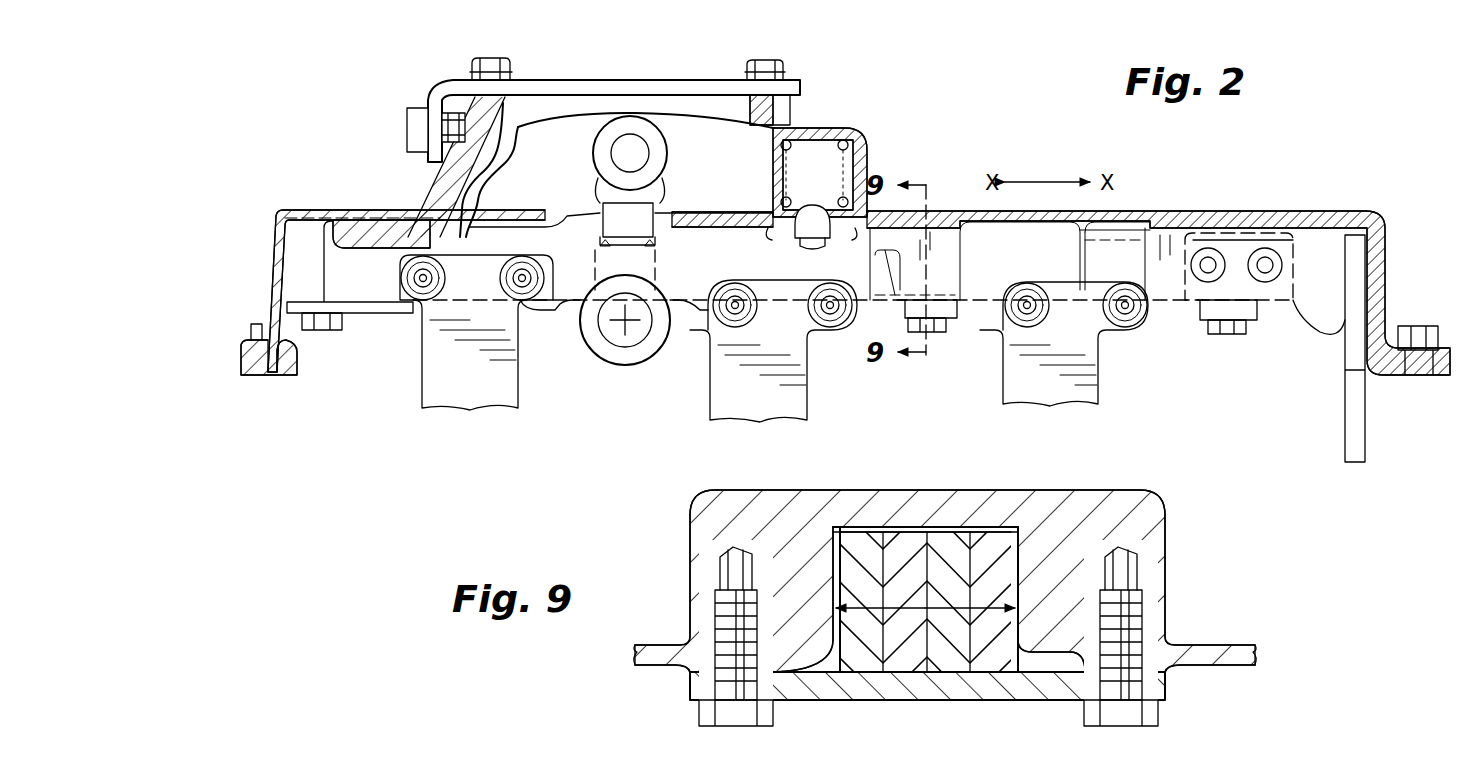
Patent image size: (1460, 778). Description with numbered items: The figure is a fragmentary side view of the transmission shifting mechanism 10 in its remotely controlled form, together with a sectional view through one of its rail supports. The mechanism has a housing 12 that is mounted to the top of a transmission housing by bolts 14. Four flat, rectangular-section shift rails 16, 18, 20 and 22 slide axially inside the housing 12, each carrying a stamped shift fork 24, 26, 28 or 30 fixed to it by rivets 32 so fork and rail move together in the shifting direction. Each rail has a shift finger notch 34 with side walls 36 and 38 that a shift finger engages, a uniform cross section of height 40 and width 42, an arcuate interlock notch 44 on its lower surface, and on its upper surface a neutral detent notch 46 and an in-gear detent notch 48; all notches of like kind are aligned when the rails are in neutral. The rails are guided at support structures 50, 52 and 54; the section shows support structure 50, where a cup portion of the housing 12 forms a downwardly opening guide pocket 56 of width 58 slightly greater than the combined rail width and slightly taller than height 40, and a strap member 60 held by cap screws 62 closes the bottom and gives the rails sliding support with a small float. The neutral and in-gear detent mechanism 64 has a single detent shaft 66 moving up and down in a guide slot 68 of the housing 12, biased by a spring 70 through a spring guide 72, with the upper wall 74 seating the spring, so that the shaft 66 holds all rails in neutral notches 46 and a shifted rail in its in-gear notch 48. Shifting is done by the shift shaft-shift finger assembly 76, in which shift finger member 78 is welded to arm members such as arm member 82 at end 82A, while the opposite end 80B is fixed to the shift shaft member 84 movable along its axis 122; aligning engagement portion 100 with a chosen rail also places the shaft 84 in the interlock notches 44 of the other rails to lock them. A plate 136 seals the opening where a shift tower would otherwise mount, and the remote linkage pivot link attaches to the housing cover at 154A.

In FIG. 2, the transmission shifting mechanism 10 is at (940, 140).
In FIG. 2, the housing 12 is at (273, 252).
In FIG. 9, the housing 12 is at (805, 510).
In FIG. 2, the bolts 14 is at (254, 324).
In FIG. 9, the reverse speed shift rail 16 is at (1013, 660).
In FIG. 9, the first and second speed shift rail 18 is at (948, 660).
In FIG. 9, the third and fourth speed shift rail 20 is at (905, 660).
In FIG. 9, the fifth and sixth speed shift rail 22 is at (838, 660).
In FIG. 2, the shift fork 24 is at (1350, 410).
In FIG. 2, the shift fork 26 is at (1085, 402).
In FIG. 2, the shift fork 28 is at (790, 404).
In FIG. 2, the shift fork 30 is at (505, 376).
In FIG. 2, the rivets 32 is at (420, 282).
In FIG. 2, the shift finger notch 34 is at (648, 250).
In FIG. 2, the side wall 36 is at (655, 240).
In FIG. 2, the side wall 38 is at (603, 245).
In FIG. 2, the height 40 is at (372, 230).
In FIG. 9, the height 40 is at (988, 668).
In FIG. 9, the width 42 is at (927, 572).
In FIG. 2, the interlock notch 44 is at (650, 340).
In FIG. 2, the neutral detent notch 46 is at (803, 240).
In FIG. 2, the in-gear detent notch 48 is at (770, 236).
In FIG. 2, the support structure 50 is at (938, 328).
In FIG. 9, the support structure 50 is at (1170, 508).
In FIG. 2, the support structure 52 is at (328, 335).
In FIG. 2, the support structure 54 is at (1225, 322).
In FIG. 9, the guide pocket 56 is at (940, 525).
In FIG. 9, the width 58 is at (870, 660).
In FIG. 2, the strap member 60 is at (298, 345).
In FIG. 9, the strap member 60 is at (1060, 690).
In FIG. 2, the cap screws 62 is at (332, 330).
In FIG. 9, the cap screws 62 is at (705, 712).
In FIG. 2, the neutral and in-gear detent mechanism 64 is at (845, 122).
In FIG. 2, the detent shaft 66 is at (815, 230).
In FIG. 2, the guide slot 68 is at (795, 220).
In FIG. 2, the spring 70 is at (858, 165).
In FIG. 2, the spring guide 72 is at (802, 205).
In FIG. 2, the upper wall 74 is at (812, 135).
In FIG. 2, the shift shaft-shift finger assembly 76 is at (672, 150).
In FIG. 2, the shift finger member 78 is at (650, 192).
In FIG. 2, the end of arm member 80B is at (600, 345).
In FIG. 2, the arm member 82 is at (612, 192).
In FIG. 2, the end of arm member 82A is at (605, 152).
In FIG. 2, the shift shaft member 84 is at (628, 345).
In FIG. 2, the shift finger engagement portion 100 is at (645, 232).
In FIG. 2, the axis 122 is at (620, 330).
In FIG. 2, the plate 136 is at (538, 85).
In FIG. 2, the pivot attachment 154A is at (410, 138).